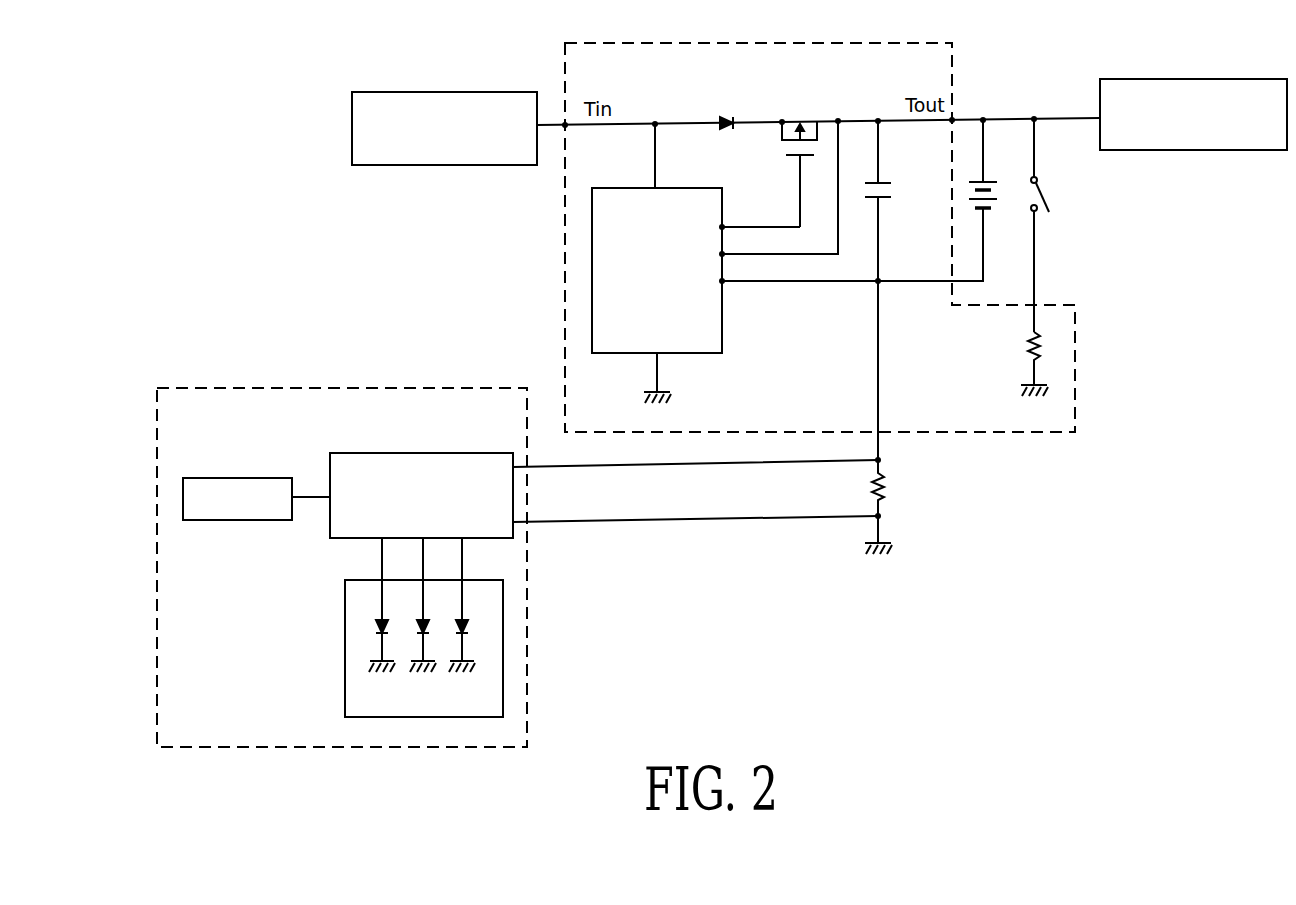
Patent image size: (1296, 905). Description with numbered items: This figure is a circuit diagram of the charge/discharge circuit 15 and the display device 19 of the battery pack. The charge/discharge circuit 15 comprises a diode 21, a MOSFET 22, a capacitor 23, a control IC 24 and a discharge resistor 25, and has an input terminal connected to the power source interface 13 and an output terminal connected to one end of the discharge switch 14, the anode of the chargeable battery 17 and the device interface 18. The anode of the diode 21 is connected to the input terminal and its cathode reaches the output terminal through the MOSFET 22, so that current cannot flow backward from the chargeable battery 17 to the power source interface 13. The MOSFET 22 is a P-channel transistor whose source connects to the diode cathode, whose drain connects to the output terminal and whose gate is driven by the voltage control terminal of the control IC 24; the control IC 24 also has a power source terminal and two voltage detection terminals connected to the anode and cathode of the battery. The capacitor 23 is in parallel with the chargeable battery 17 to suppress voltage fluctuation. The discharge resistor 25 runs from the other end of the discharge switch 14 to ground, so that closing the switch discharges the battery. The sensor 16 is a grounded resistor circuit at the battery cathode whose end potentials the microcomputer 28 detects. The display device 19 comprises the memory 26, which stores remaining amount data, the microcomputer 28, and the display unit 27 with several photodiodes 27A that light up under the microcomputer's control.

The power source interface 13 is at (490, 92).
The discharge switch 14 is at (1042, 190).
The charge/discharge circuit 15 is at (855, 43).
The sensor 16 is at (884, 486).
The chargeable battery 17 is at (988, 182).
The device interface 18 is at (1238, 79).
The display device 19 is at (423, 388).
The diode 21 is at (727, 115).
The MOSFET 22 is at (790, 117).
The capacitor 23 is at (884, 183).
The control IC 24 is at (683, 188).
The discharge resistor 25 is at (1030, 350).
The memory 26 is at (267, 478).
The display unit 27 is at (381, 648).
The photodiode 27A is at (378, 630).
The microcomputer 28 is at (462, 453).